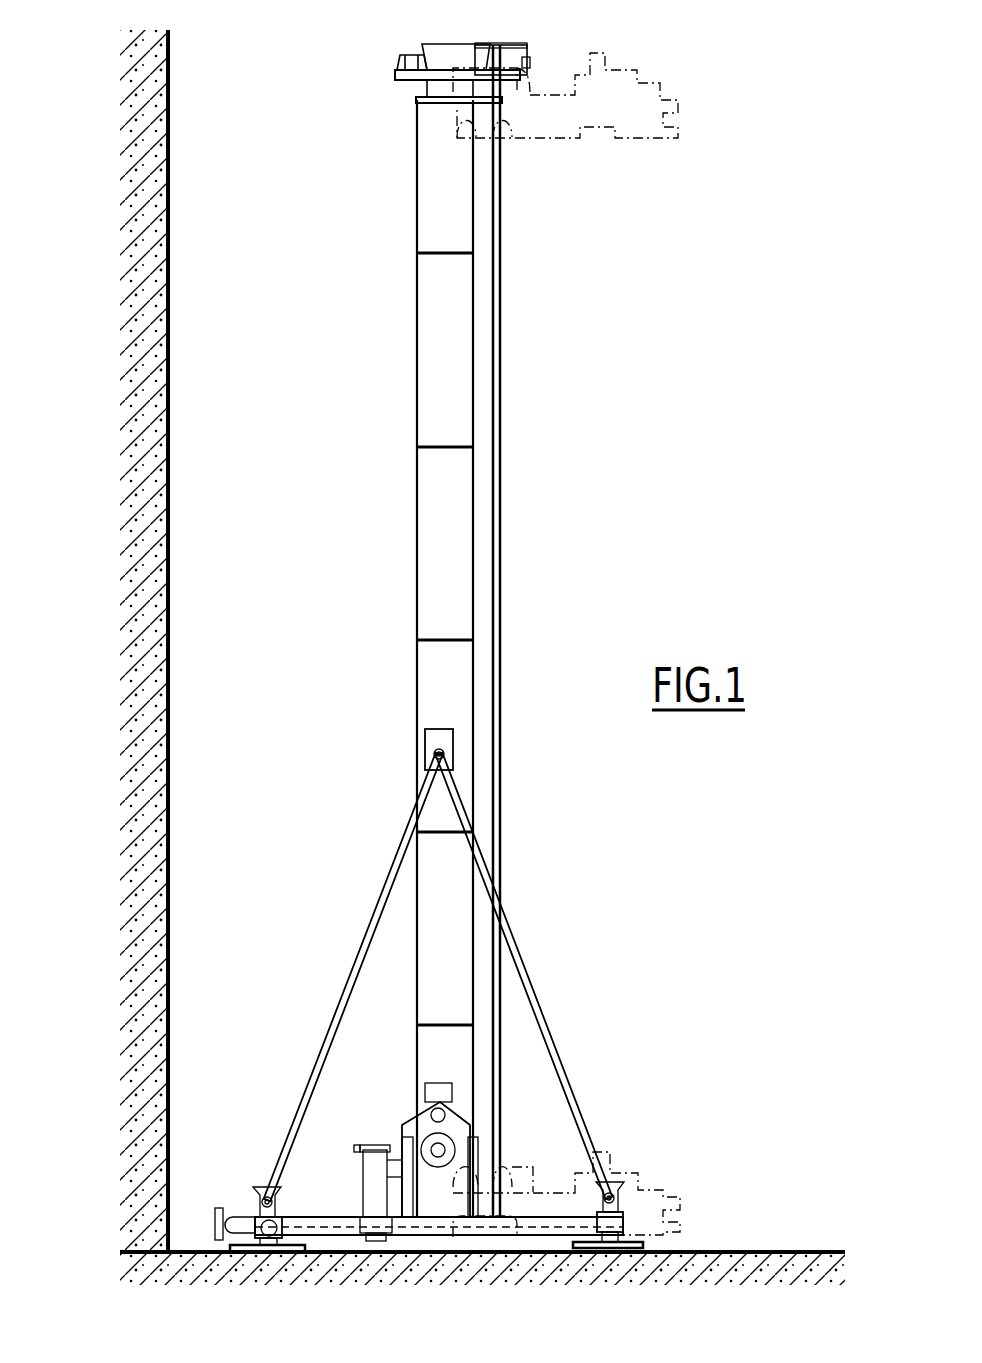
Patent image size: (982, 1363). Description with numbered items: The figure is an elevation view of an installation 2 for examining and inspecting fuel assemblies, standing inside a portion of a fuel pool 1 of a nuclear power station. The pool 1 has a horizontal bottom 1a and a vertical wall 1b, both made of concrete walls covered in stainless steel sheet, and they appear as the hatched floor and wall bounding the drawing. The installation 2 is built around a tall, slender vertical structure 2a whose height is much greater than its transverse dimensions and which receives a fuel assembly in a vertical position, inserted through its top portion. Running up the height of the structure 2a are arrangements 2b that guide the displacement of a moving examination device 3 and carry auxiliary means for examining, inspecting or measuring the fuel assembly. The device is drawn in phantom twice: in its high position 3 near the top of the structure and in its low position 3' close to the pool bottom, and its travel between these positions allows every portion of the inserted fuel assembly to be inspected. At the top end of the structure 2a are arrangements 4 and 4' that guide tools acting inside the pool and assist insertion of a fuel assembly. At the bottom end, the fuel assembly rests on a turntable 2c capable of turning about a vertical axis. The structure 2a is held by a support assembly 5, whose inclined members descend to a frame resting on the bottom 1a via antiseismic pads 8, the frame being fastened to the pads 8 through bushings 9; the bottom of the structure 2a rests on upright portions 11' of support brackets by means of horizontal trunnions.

The fuel pool 1 is at (439, 660).
The horizontal bottom 1a is at (482, 1286).
The vertical wall 1b is at (112, 642).
The installation 2 is at (439, 660).
The vertical structure 2a is at (427, 552).
The guiding arrangements 2b is at (482, 375).
The turntable 2c is at (445, 1236).
The moving examination device 3 is at (565, 126).
The low position of the examination device 3' is at (567, 1172).
The guiding arrangement 4 is at (391, 44).
The guiding arrangement 4' is at (489, 38).
The support assembly 5 is at (582, 1050).
The antiseismic pads 8 is at (233, 1188).
The bushings 9 is at (282, 1218).
The upright portions 11' is at (414, 1153).